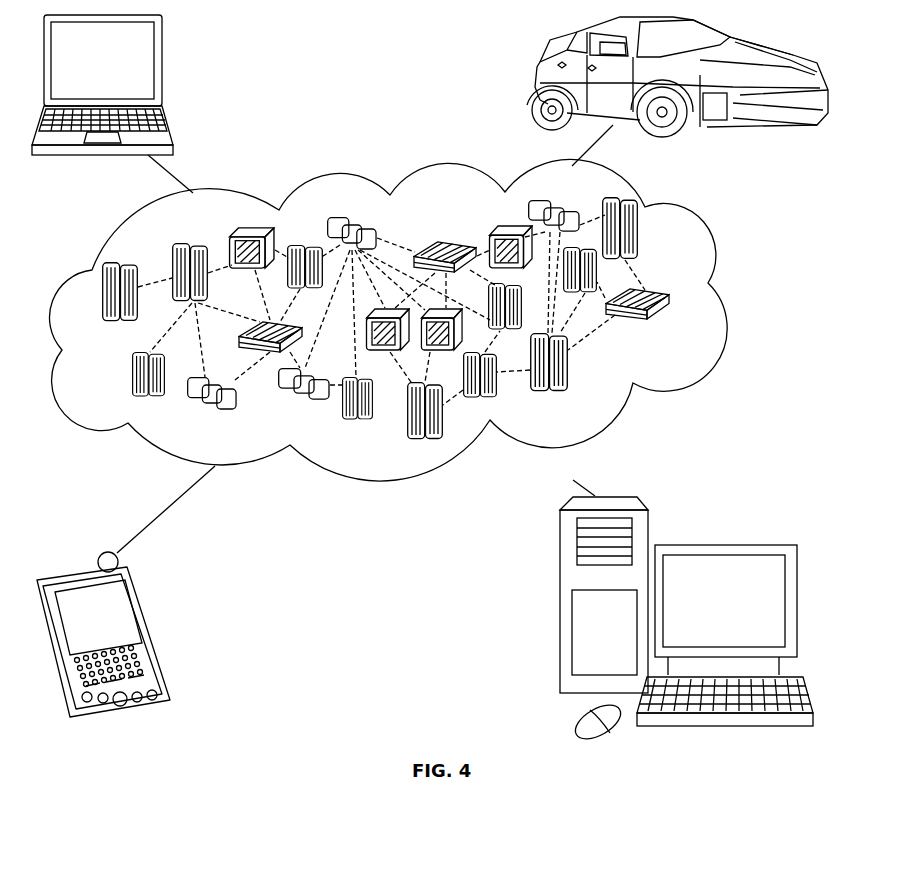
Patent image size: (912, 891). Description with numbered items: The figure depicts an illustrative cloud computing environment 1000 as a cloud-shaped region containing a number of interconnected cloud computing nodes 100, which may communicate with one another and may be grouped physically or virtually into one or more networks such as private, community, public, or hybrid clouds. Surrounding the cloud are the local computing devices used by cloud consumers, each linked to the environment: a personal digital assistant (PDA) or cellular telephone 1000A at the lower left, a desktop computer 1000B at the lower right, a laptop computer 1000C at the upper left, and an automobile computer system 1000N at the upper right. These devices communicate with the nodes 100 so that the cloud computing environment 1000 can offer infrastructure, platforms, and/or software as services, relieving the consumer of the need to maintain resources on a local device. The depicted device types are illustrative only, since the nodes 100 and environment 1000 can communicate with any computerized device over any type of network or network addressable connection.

The laptop computer 1000C is at (163, 68).
The automobile computer system 1000N is at (537, 82).
The personal digital assistant (PDA) or cellular telephone 1000A is at (153, 627).
The desktop computer 1000B is at (732, 524).
The cloud computing environment 1000 is at (720, 297).
The cloud computing nodes 100 is at (676, 331).